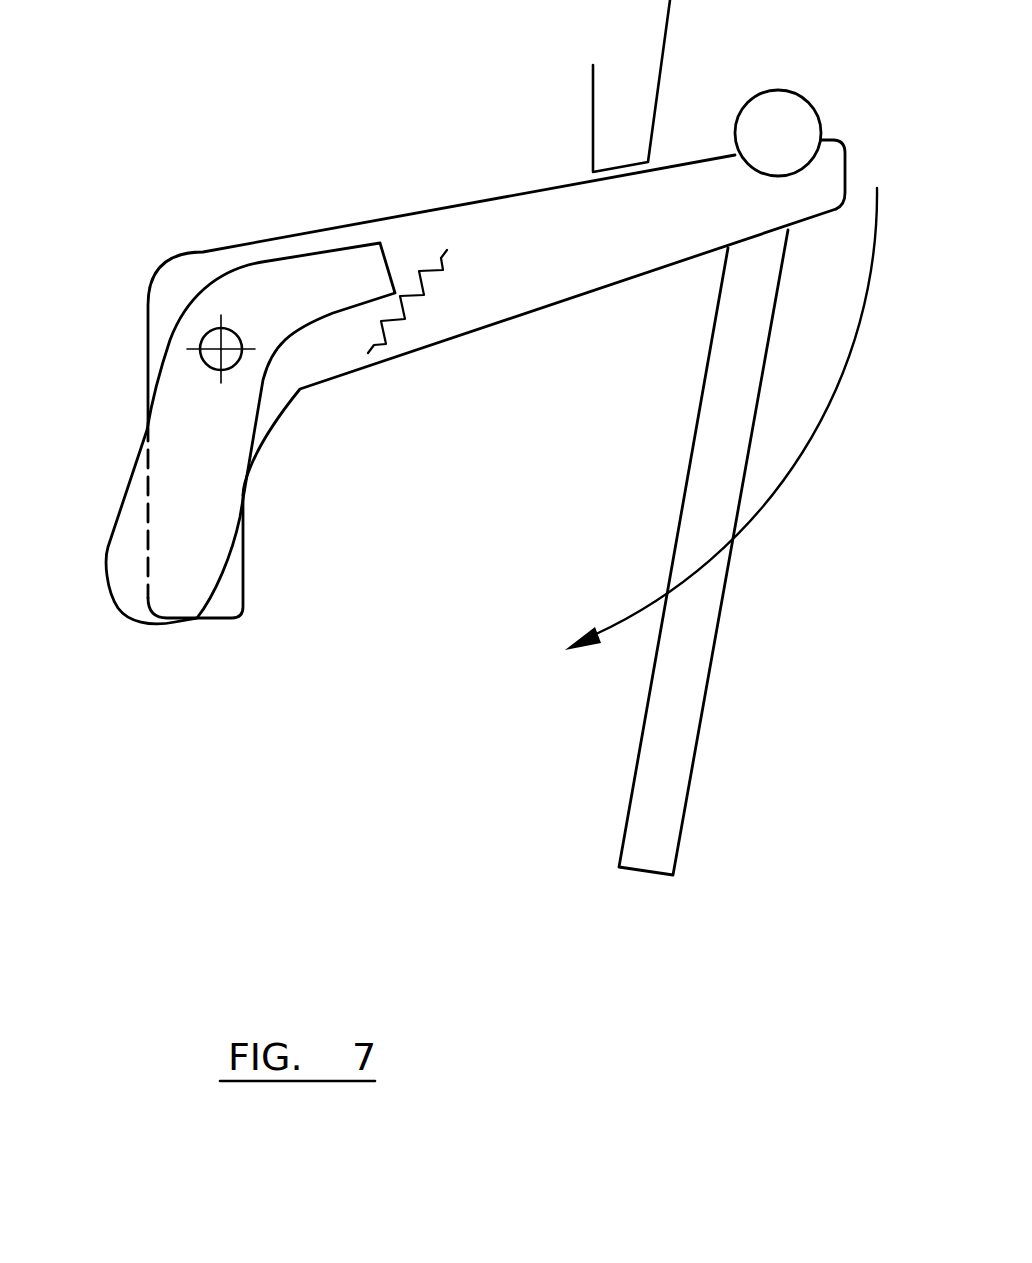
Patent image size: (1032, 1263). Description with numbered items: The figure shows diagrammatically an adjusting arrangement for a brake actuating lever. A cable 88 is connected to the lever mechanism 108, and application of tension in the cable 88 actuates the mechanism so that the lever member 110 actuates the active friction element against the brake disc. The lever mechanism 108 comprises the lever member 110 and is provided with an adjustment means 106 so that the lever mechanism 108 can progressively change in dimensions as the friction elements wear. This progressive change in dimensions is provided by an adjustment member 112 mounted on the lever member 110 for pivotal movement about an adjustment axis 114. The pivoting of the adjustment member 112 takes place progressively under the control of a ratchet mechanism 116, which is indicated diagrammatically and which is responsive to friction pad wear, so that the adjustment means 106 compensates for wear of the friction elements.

The cable 88 is at (682, 730).
The adjustment means 106 is at (112, 483).
The lever mechanism 108 is at (496, 337).
The lever member 110 is at (282, 418).
The adjustment member 112 is at (233, 533).
The adjustment axis 114 is at (213, 343).
The ratchet mechanism 116 is at (402, 308).